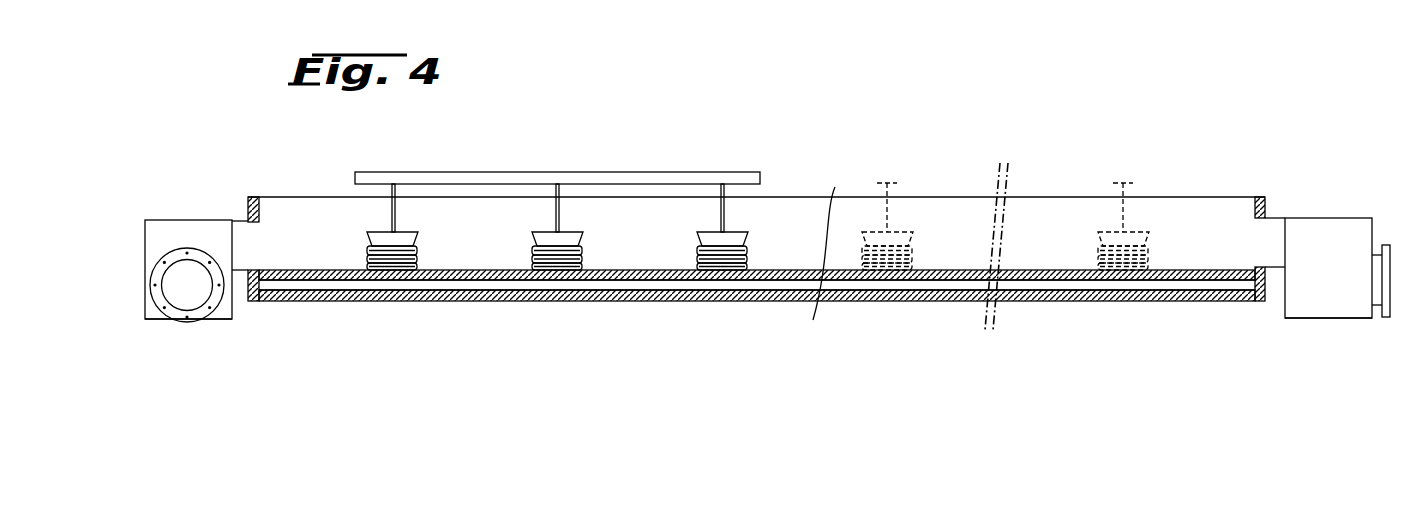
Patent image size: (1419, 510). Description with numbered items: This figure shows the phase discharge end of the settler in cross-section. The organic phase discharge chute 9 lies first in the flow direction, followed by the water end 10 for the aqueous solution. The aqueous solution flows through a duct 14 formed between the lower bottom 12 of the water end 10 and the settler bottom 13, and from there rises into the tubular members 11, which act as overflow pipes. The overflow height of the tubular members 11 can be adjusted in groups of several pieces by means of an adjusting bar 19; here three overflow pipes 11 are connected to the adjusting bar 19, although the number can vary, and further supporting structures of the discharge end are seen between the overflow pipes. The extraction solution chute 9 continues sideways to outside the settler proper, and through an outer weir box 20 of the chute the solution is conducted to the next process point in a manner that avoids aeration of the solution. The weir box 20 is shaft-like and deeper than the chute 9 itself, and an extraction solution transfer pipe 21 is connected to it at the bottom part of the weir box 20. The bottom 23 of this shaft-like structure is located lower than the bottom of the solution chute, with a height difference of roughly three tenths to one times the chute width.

The organic phase discharge chute 9 is at (1053, 215).
The water end 10 is at (323, 215).
The tubular member 11 is at (414, 237).
The lower bottom 12 is at (492, 279).
The settler bottom 13 is at (615, 301).
The duct 14 is at (725, 283).
The adjusting bar 19 is at (396, 207).
The weir box 20 is at (192, 230).
The extraction solution transfer pipe 21 is at (182, 298).
The bottom 23 is at (212, 320).